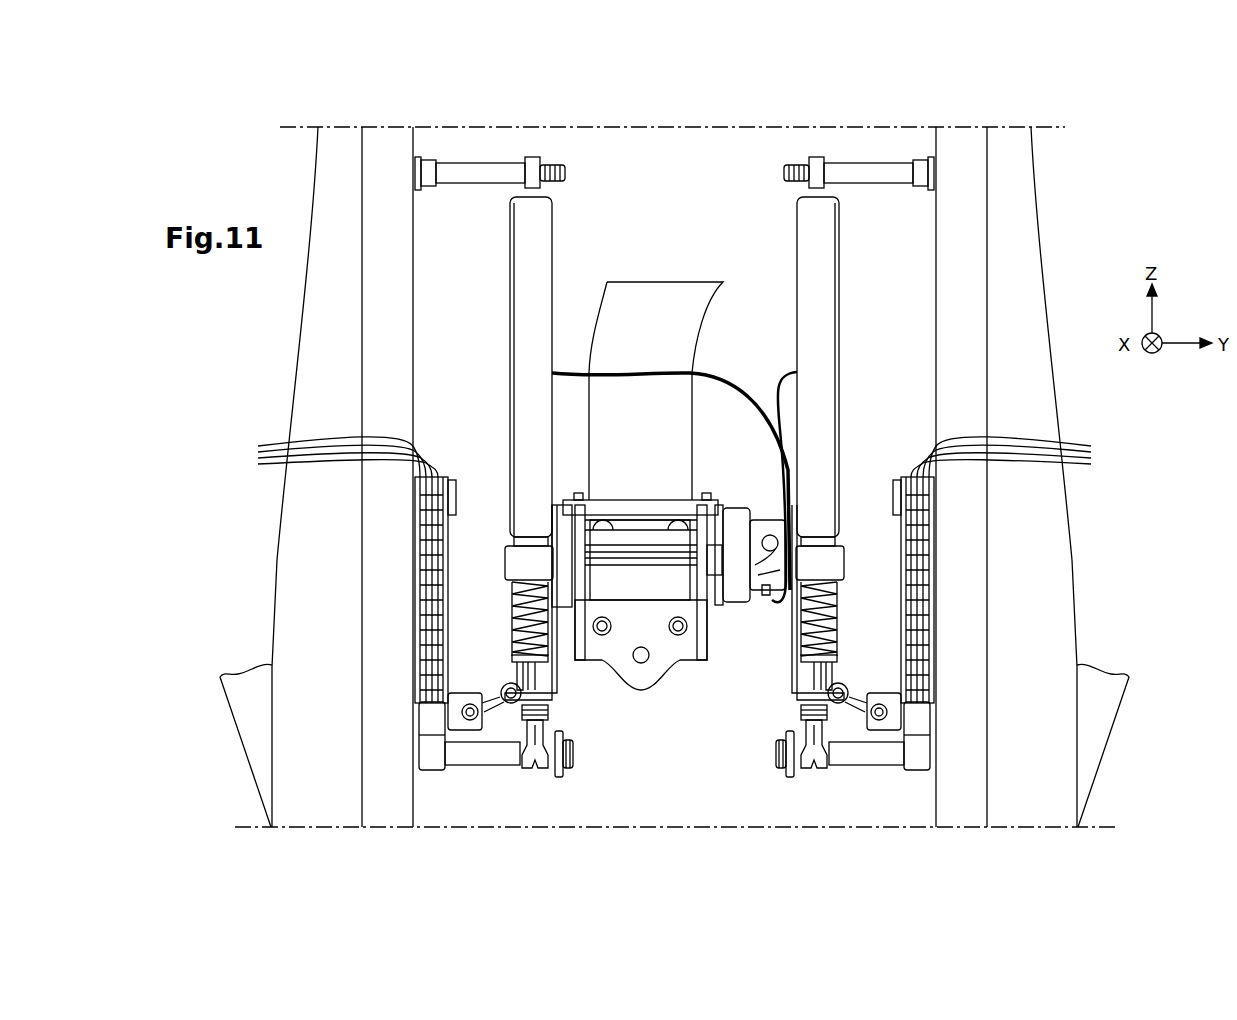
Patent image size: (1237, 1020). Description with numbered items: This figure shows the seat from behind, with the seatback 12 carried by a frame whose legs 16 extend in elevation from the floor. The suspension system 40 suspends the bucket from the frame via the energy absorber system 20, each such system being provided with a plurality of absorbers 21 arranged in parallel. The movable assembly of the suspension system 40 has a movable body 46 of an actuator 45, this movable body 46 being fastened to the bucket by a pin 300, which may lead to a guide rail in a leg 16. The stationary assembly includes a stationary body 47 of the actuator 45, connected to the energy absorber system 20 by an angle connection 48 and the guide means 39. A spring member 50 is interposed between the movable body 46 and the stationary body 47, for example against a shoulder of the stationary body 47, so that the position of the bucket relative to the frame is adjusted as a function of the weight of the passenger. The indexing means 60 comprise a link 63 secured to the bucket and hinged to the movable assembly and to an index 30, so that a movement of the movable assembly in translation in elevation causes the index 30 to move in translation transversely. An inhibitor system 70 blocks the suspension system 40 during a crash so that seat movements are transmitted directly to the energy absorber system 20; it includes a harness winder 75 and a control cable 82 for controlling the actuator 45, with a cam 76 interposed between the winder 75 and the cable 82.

The seatback 12 is at (1013, 229).
The leg 16 is at (388, 232).
The pin 300 is at (478, 172).
The movable body 46 is at (540, 232).
The actuator 45 is at (565, 277).
The suspension system 40 is at (843, 350).
The spring member 50 is at (832, 600).
The stationary body 47 is at (560, 728).
The indexing means 60 is at (501, 668).
The link 63 is at (457, 691).
The index 30 is at (444, 650).
The guide means 39 is at (430, 720).
The angle connection 48 is at (475, 766).
The energy absorber system 20 is at (447, 478).
The absorbers 21 is at (670, 453).
The control cable 82 is at (672, 373).
The harness winder 75 is at (656, 510).
The cam 76 is at (700, 578).
The inhibitor system 70 is at (740, 502).